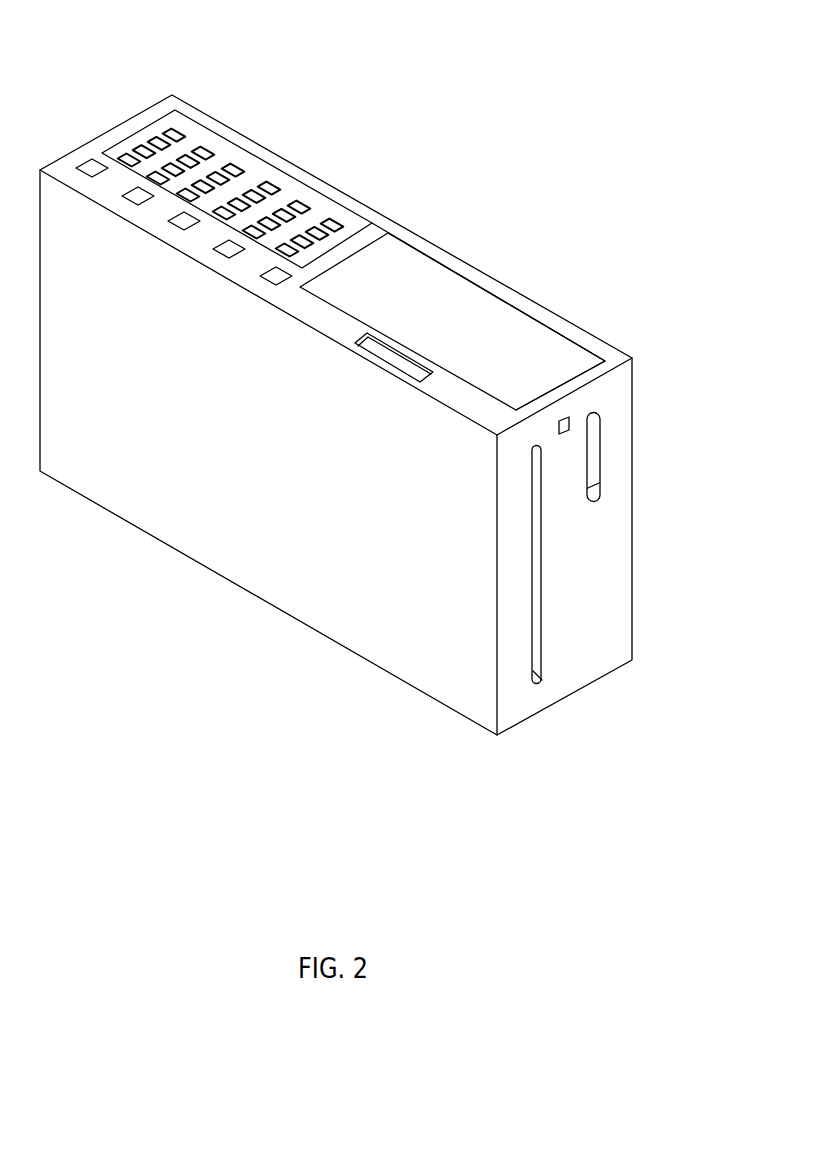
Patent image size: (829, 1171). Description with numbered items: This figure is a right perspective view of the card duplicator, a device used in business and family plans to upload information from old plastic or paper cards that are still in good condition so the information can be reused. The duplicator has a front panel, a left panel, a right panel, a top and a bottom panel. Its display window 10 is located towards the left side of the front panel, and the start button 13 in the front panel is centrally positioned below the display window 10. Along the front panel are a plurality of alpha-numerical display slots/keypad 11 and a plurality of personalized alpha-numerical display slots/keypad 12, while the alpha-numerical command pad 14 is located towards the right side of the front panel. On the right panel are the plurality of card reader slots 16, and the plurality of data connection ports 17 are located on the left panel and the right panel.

The display window 10 is at (460, 300).
The plurality of alpha-numerical display slots/keypad 11 is at (92, 170).
The plurality of personalized alpha-numerical display slots/keypad 12 is at (275, 278).
The start button 13 is at (418, 370).
The alpha-numerical command pad 14 is at (222, 160).
The plurality of card reader slots 16 is at (549, 692).
The plurality of data connection ports 17 is at (610, 483).